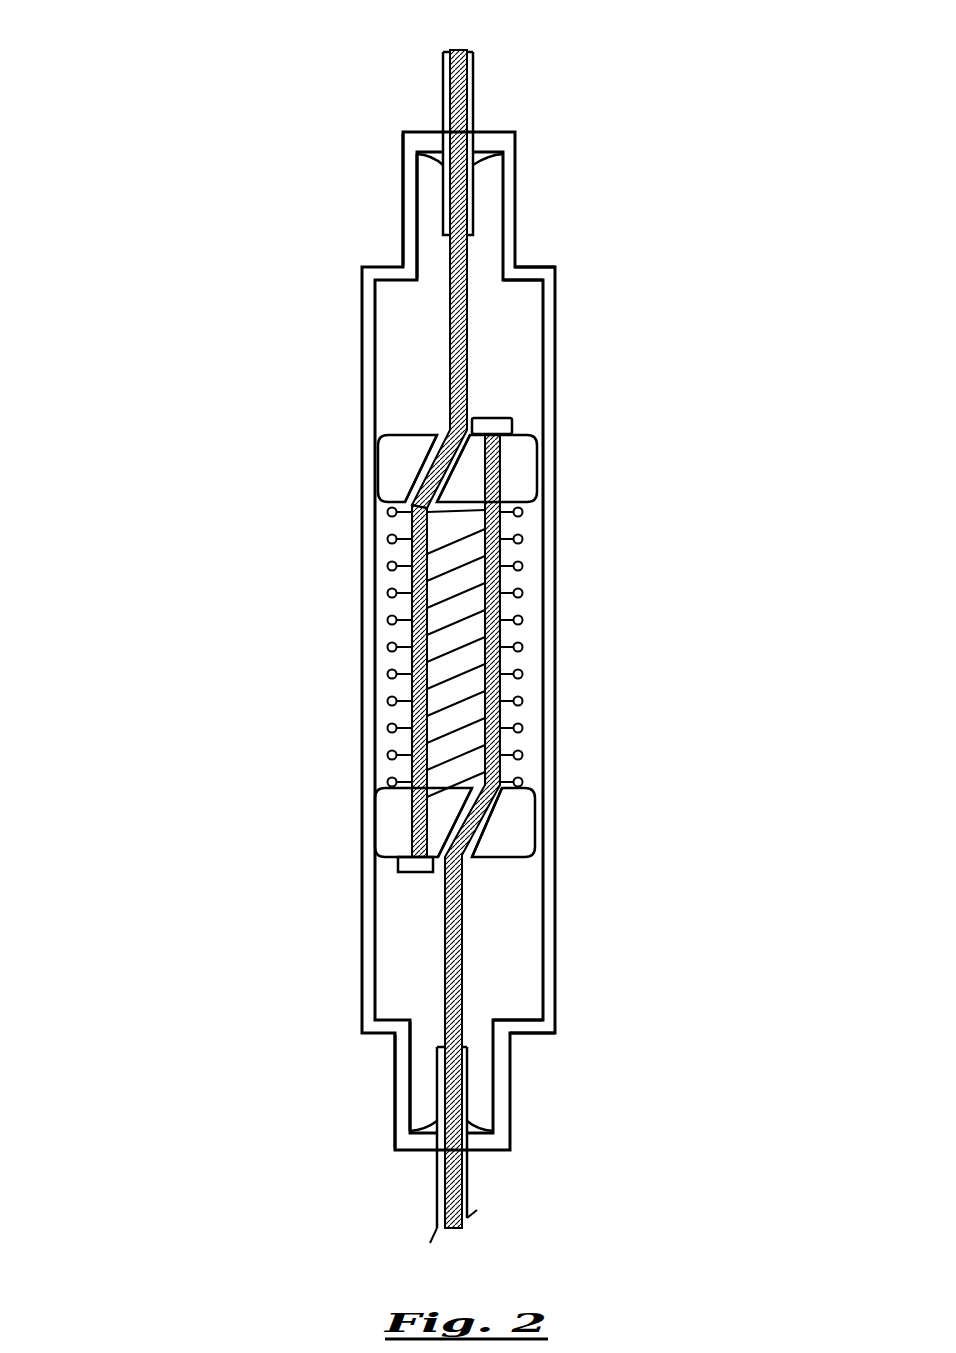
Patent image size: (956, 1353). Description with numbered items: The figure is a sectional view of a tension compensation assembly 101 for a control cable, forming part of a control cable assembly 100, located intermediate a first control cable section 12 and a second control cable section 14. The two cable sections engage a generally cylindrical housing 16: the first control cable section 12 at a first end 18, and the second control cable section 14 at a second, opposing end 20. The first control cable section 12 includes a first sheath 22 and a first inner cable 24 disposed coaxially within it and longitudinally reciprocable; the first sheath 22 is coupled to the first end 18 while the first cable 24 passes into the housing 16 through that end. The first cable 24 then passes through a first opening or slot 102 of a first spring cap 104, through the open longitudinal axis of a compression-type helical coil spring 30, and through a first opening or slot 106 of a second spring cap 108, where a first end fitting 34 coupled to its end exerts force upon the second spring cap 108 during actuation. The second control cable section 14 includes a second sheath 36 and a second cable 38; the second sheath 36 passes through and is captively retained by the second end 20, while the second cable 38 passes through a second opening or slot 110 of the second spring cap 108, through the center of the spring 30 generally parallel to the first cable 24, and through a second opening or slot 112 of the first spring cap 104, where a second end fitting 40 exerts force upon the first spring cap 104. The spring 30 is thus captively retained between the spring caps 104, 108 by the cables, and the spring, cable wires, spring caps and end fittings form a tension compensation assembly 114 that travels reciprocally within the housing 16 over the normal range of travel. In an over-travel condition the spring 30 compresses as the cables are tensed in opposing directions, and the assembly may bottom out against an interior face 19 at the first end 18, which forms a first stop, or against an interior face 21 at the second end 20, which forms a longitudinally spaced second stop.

The control cable assembly 100 is at (146, 292).
The tension compensation assembly 101 is at (570, 722).
The first control cable section 12 is at (472, 276).
The second control cable section 14 is at (453, 1151).
The housing 16 is at (556, 343).
The first end 18 is at (402, 203).
The interior face 19 is at (522, 296).
The second end 20 is at (395, 1095).
The interior face 21 is at (517, 1020).
The first sheath 22 is at (473, 107).
The first cable 24 is at (477, 50).
The spring 30 is at (410, 705).
The first end fitting 34 is at (402, 873).
The second sheath 36 is at (437, 1177).
The second cable 38 is at (463, 1223).
The second end fitting 40 is at (512, 425).
The first opening or slot 102 is at (415, 492).
The first spring cap 104 is at (386, 447).
The first opening or slot 106 is at (408, 825).
The second spring cap 108 is at (523, 840).
The second opening or slot 110 is at (503, 812).
The second opening or slot 112 is at (500, 470).
The tension compensation assembly 114 is at (530, 634).